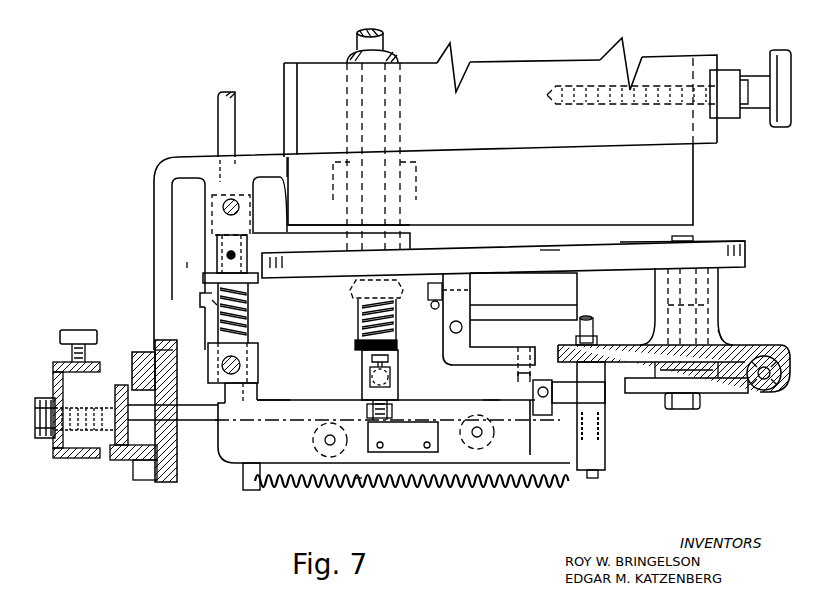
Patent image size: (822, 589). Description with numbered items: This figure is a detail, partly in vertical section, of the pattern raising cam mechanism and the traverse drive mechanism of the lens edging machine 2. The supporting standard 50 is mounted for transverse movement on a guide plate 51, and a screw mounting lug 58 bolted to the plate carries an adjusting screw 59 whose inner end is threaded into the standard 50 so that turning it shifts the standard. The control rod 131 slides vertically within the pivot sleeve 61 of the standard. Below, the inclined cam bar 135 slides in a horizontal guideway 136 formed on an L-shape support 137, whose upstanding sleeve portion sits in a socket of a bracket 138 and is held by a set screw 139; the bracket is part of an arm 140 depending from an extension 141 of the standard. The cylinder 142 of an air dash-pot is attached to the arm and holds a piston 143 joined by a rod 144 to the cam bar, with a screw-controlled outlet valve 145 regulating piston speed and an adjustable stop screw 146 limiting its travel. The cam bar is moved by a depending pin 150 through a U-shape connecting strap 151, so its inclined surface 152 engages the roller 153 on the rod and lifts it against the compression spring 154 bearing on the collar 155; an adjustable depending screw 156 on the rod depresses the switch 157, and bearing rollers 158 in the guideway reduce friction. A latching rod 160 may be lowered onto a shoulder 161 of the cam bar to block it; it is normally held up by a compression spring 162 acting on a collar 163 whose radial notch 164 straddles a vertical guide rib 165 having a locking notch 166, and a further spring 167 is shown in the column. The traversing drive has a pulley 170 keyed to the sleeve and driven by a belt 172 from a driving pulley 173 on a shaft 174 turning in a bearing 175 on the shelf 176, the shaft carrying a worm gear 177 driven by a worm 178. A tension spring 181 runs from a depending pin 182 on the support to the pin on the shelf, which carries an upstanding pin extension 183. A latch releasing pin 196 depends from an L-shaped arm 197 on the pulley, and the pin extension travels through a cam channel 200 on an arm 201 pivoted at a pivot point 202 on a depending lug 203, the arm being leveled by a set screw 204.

The machine 2 is at (455, 55).
The supporting standard 50 is at (680, 193).
The guide plate 51 is at (500, 85).
The screw mounting lug 58 is at (725, 68).
The adjusting screw 59 is at (784, 115).
The pivot sleeve 61 is at (347, 57).
The control rod 131 is at (384, 39).
The cam bar 135 is at (484, 404).
The guideway 136 is at (292, 415).
The L-shape support 137 is at (250, 393).
The bracket 138 is at (203, 370).
The set screw 139 is at (238, 362).
The arm 140 is at (166, 317).
The extension 141 is at (203, 165).
The cylinder 142 is at (127, 367).
The piston 143 is at (118, 413).
The rod 144 is at (163, 420).
The screw-controlled outlet valve 145 is at (56, 362).
The adjustable stop screw 146 is at (67, 423).
The depending pin 150 is at (604, 433).
The U-shape connecting strap 151 is at (565, 403).
The inclined surface 152 is at (400, 395).
The roller 153 is at (366, 373).
The compression spring 154 is at (364, 322).
The collar 155 is at (397, 345).
The adjustable depending screw 156 is at (308, 486).
The switch 157 is at (397, 452).
The bearing rollers 158 is at (470, 448).
The latching rod 160 is at (230, 397).
The shoulder 161 is at (262, 400).
The compression spring 162 is at (215, 305).
The collar 163 is at (217, 278).
The radial notch 164 is at (200, 297).
The vertical guide rib 165 is at (187, 265).
The locking notch 166 is at (201, 298).
The spring 167 is at (250, 312).
The pulley 170 is at (437, 233).
The belt 172 is at (556, 250).
The driving pulley 173 is at (714, 238).
The shaft 174 is at (686, 286).
The bearing 175 is at (722, 332).
The shelf 176 is at (633, 347).
The worm gear 177 is at (732, 386).
The worm 178 is at (780, 384).
The tension spring 181 is at (362, 490).
The depending pin 182 is at (245, 482).
The pin extension 183 is at (590, 323).
The latch releasing pin 196 is at (522, 377).
The L-shaped arm 197 is at (480, 350).
The cam channel 200 is at (555, 310).
The arm 201 is at (511, 293).
The pivot point 202 is at (458, 322).
The depending lug 203 is at (446, 290).
The set screw 204 is at (433, 307).